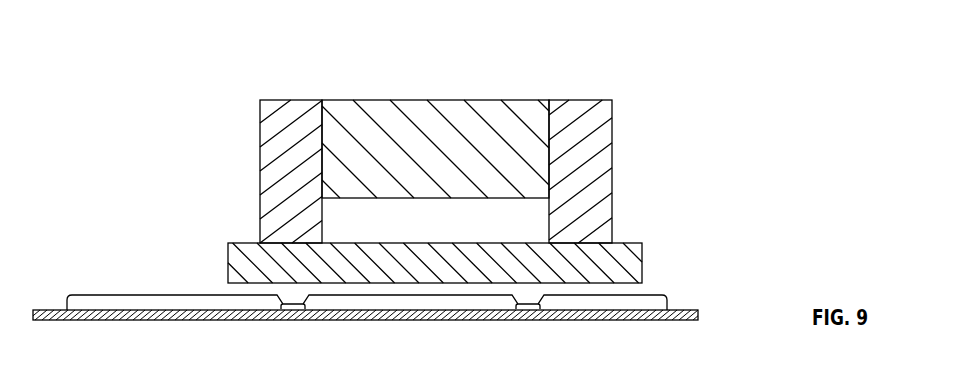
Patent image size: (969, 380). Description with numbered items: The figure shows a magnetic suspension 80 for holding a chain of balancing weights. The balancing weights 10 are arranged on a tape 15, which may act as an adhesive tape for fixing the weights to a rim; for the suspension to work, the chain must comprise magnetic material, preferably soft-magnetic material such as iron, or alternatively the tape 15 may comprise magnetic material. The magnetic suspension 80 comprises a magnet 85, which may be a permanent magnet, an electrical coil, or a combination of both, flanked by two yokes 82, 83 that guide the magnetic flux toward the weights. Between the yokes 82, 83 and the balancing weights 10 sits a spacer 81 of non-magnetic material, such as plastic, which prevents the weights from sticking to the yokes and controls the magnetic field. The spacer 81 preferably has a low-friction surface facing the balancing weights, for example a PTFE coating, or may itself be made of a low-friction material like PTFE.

The balancing weights 10 is at (187, 308).
The tape 15 is at (51, 310).
The magnetic suspension 80 is at (477, 154).
The spacer 81 is at (624, 259).
The yoke 82 is at (578, 100).
The yoke 83 is at (288, 100).
The magnet 85 is at (436, 100).